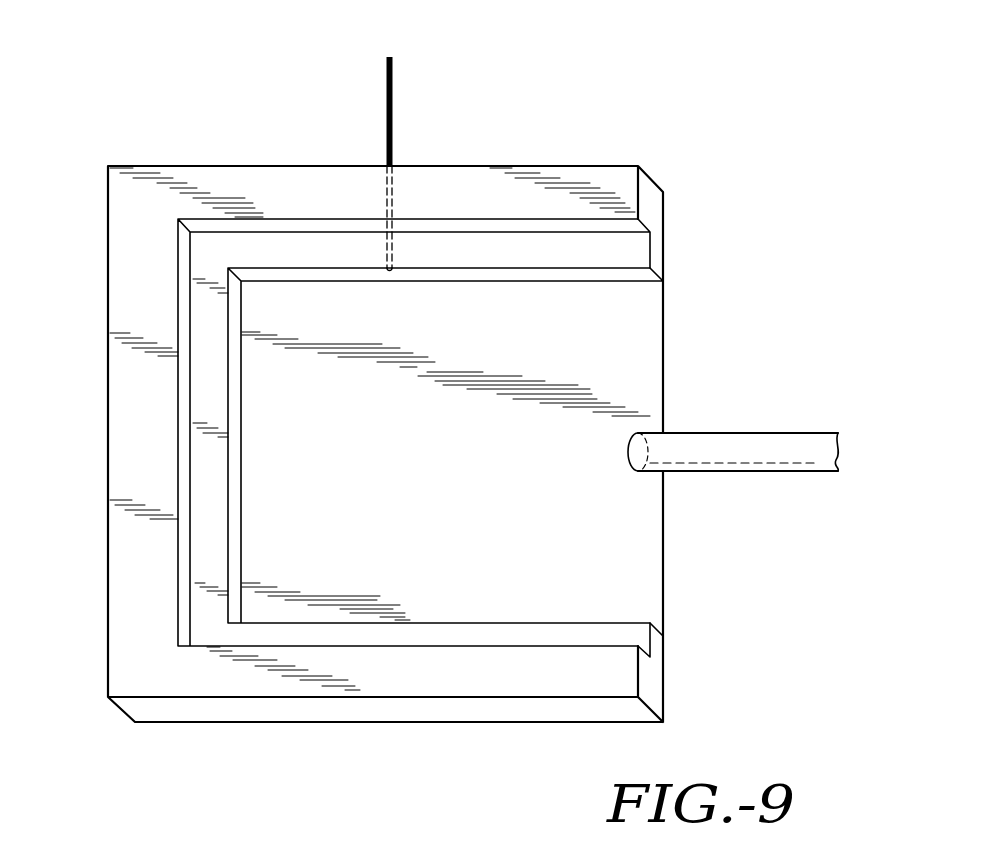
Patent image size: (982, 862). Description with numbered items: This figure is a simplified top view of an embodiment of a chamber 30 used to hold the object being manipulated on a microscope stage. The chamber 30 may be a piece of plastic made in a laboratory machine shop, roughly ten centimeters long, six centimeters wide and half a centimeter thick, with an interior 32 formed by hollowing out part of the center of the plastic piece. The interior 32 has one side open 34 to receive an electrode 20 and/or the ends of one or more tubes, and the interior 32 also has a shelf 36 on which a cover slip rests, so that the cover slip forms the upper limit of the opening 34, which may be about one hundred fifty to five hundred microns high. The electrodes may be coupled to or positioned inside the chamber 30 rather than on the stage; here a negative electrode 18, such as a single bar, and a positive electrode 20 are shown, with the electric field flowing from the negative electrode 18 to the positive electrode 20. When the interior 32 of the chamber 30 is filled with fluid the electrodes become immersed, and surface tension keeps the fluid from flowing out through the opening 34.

The chamber 30 is at (379, 362).
The interior 32 is at (640, 571).
The open side 34 is at (637, 343).
The shelf 36 is at (637, 252).
The negative electrode 18 is at (393, 88).
The positive electrode 20 is at (755, 449).